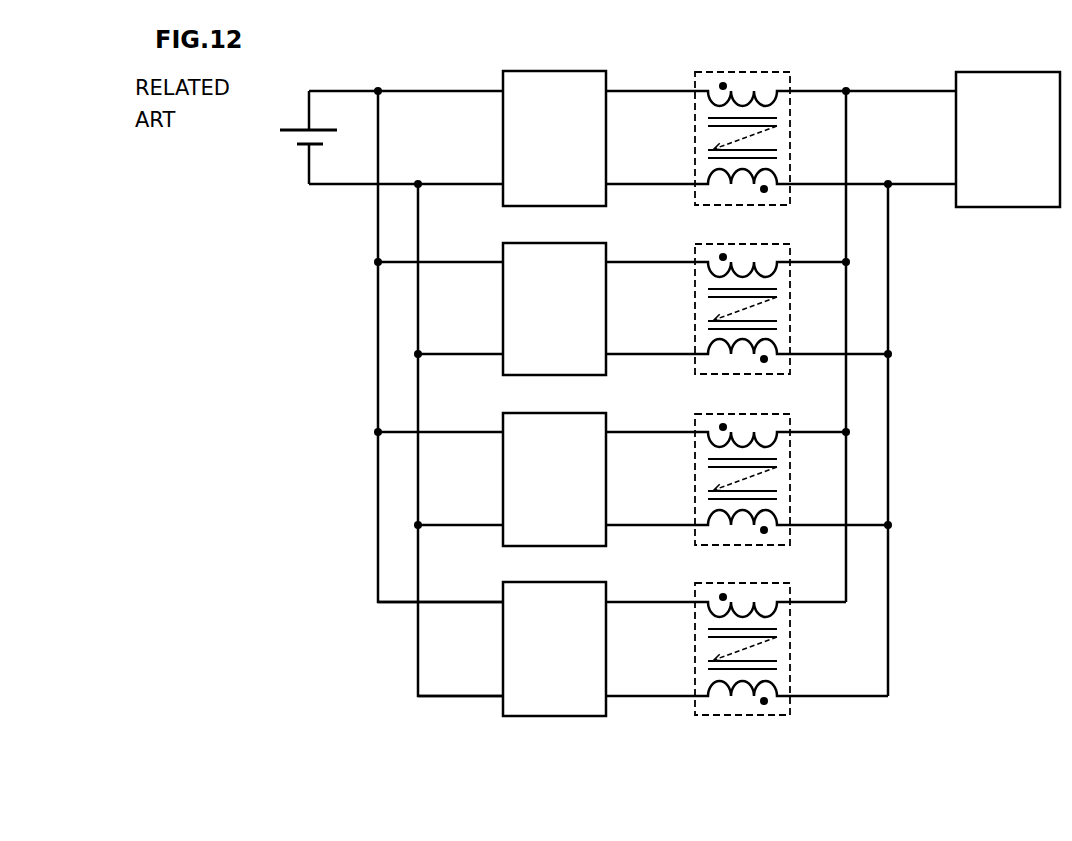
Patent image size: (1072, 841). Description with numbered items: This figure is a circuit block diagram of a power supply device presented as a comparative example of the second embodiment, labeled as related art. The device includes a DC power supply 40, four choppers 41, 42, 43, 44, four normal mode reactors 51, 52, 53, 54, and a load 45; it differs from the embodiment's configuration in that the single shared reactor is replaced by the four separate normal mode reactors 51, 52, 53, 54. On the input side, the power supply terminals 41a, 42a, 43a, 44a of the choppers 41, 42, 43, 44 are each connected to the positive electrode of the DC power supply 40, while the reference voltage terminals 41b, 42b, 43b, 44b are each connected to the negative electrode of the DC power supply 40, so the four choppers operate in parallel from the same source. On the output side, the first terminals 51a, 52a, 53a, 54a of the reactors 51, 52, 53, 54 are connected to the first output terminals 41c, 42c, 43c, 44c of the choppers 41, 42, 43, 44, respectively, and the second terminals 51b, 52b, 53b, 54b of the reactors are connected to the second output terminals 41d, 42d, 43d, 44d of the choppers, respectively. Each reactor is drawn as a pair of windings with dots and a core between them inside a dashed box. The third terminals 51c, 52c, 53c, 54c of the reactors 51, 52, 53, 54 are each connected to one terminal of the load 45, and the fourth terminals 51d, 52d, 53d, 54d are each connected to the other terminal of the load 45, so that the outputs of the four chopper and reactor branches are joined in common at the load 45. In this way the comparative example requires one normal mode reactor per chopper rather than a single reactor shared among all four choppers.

The DC power supply 40 is at (300, 130).
The chopper 41 is at (520, 70).
The power supply terminal 41a is at (503, 92).
The reference voltage terminal 41b is at (503, 183).
The first output terminal 41c is at (607, 93).
The second output terminal 41d is at (607, 183).
The chopper 42 is at (520, 241).
The power supply terminal 42a is at (503, 263).
The reference voltage terminal 42b is at (503, 354).
The first output terminal 42c is at (607, 264).
The second output terminal 42d is at (607, 354).
The chopper 43 is at (520, 411).
The power supply terminal 43a is at (503, 433).
The reference voltage terminal 43b is at (503, 524).
The first output terminal 43c is at (607, 434).
The second output terminal 43d is at (607, 524).
The chopper 44 is at (520, 581).
The power supply terminal 44a is at (503, 603).
The reference voltage terminal 44b is at (503, 695).
The first output terminal 44c is at (607, 604).
The second output terminal 44d is at (607, 695).
The load 45 is at (1010, 72).
The normal mode reactor 51 is at (694, 138).
The first terminal 51a is at (695, 90).
The second terminal 51b is at (695, 185).
The third terminal 51c is at (791, 90).
The fourth terminal 51d is at (791, 183).
The normal mode reactor 52 is at (694, 309).
The first terminal 52a is at (695, 261).
The second terminal 52b is at (695, 356).
The third terminal 52c is at (791, 261).
The fourth terminal 52d is at (791, 354).
The normal mode reactor 53 is at (694, 479).
The first terminal 53a is at (695, 431).
The second terminal 53b is at (695, 526).
The third terminal 53c is at (791, 431).
The fourth terminal 53d is at (791, 524).
The normal mode reactor 54 is at (694, 649).
The first terminal 54a is at (695, 601).
The second terminal 54b is at (695, 697).
The third terminal 54c is at (791, 601).
The fourth terminal 54d is at (791, 695).